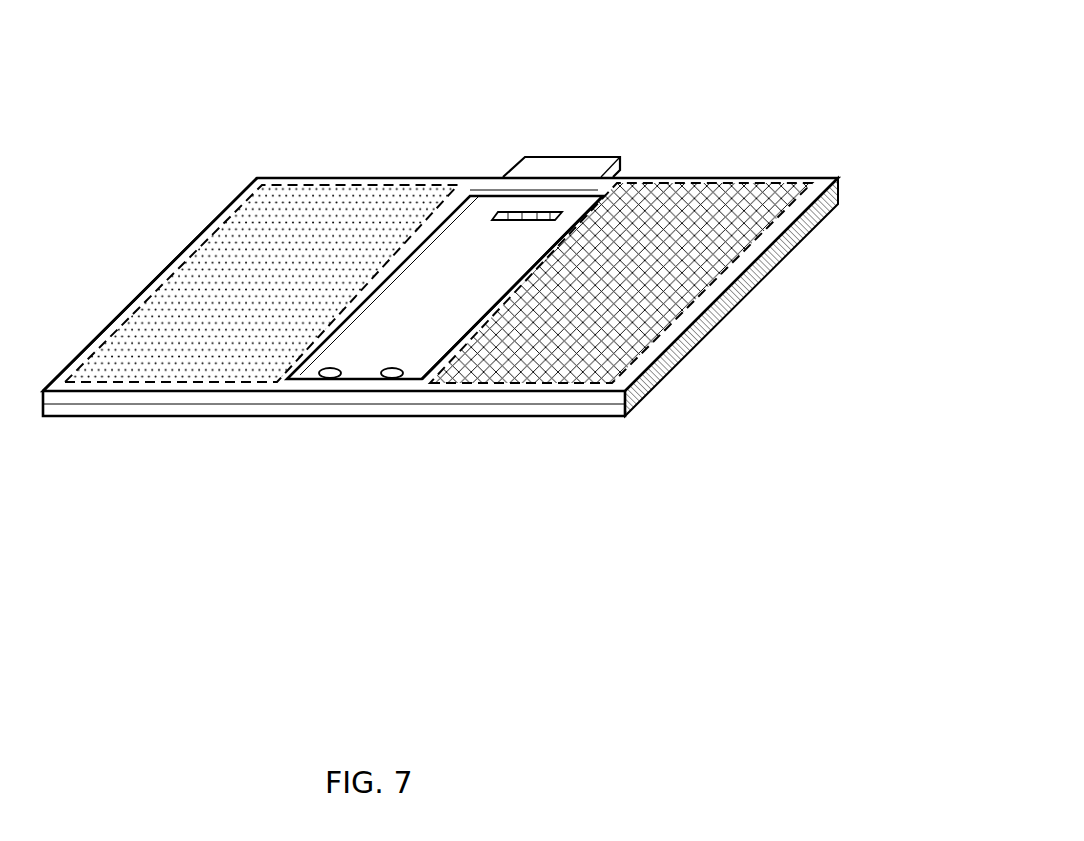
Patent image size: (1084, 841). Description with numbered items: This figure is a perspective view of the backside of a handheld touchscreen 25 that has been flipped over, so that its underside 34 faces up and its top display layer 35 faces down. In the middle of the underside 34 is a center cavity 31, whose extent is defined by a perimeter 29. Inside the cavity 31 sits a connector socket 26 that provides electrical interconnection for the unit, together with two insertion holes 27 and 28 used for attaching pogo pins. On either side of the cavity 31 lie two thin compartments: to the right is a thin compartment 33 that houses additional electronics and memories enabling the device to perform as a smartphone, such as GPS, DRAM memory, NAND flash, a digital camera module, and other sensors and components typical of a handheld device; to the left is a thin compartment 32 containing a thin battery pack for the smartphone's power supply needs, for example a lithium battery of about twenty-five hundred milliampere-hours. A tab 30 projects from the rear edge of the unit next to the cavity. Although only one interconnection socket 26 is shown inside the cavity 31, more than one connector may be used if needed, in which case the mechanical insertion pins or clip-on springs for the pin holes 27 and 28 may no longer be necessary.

The touchscreen 25 is at (717, 82).
The connector socket 26 is at (497, 210).
The insertion hole 27 is at (327, 378).
The insertion hole 28 is at (390, 378).
The perimeter 29 is at (443, 376).
The tab 30 is at (588, 155).
The center cavity 31 is at (473, 228).
The thin compartment 32 is at (238, 243).
The thin compartment 33 is at (740, 205).
The underside 34 is at (125, 302).
The top display layer 35 is at (166, 418).